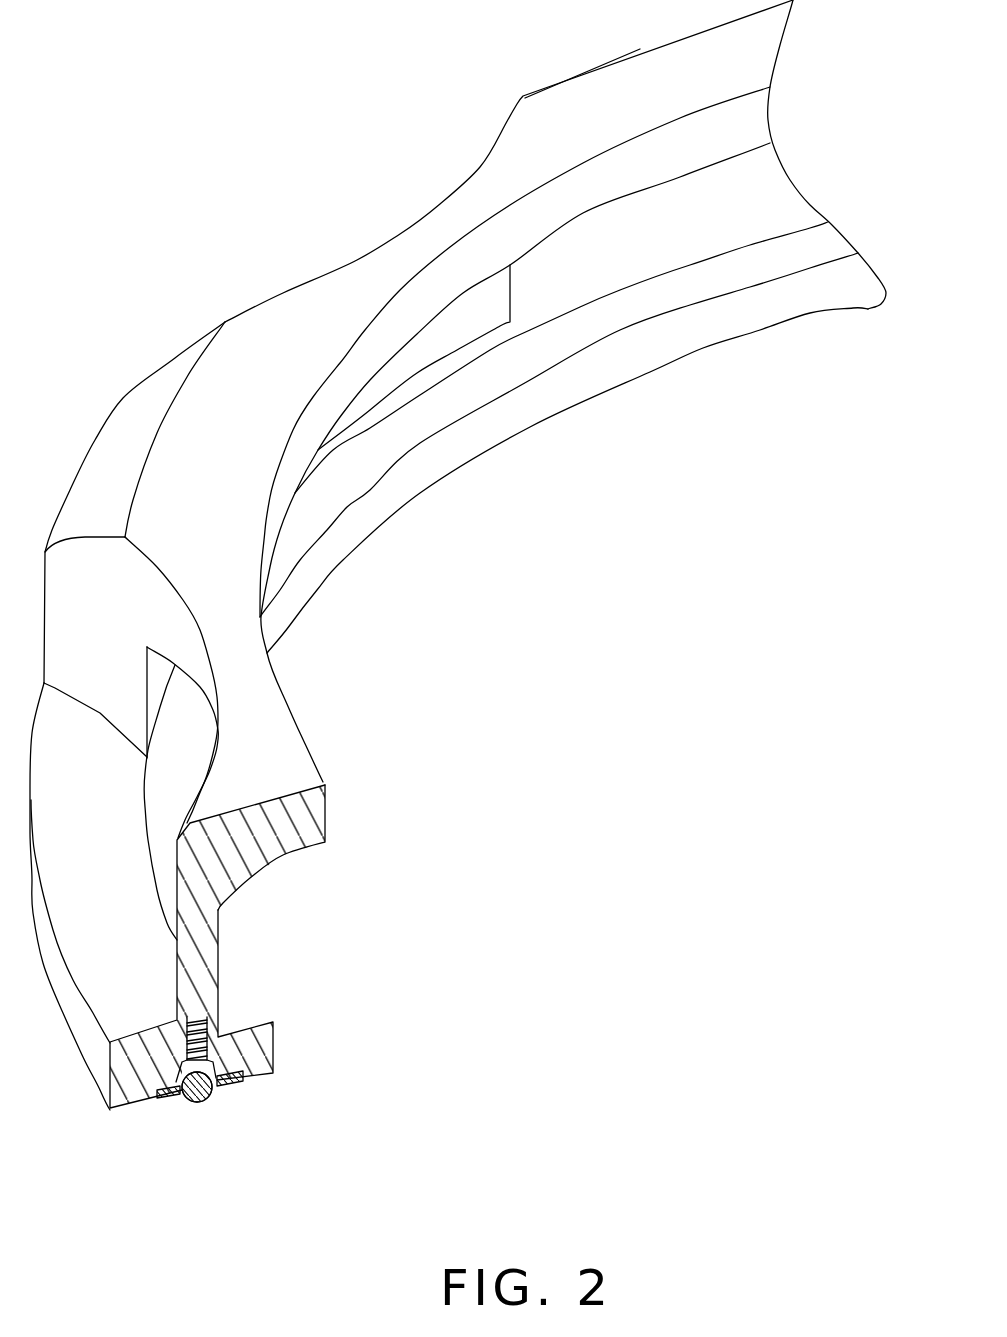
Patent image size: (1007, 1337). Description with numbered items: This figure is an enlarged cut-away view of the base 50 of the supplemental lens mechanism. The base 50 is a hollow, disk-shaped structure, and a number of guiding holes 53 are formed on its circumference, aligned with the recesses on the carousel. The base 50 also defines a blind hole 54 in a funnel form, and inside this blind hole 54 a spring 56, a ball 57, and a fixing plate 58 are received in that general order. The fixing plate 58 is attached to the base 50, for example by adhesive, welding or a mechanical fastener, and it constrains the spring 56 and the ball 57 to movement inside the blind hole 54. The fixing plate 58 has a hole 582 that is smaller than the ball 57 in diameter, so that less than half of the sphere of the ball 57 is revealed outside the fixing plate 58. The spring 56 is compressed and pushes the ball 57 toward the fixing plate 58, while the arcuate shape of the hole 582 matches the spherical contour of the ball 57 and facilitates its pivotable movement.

The base 50 is at (458, 611).
The guiding holes 53 is at (183, 732).
The blind hole 54 is at (217, 1066).
The spring 56 is at (209, 1026).
The ball 57 is at (193, 1096).
The fixing plate 58 is at (223, 1147).
The hole 582 is at (213, 1090).